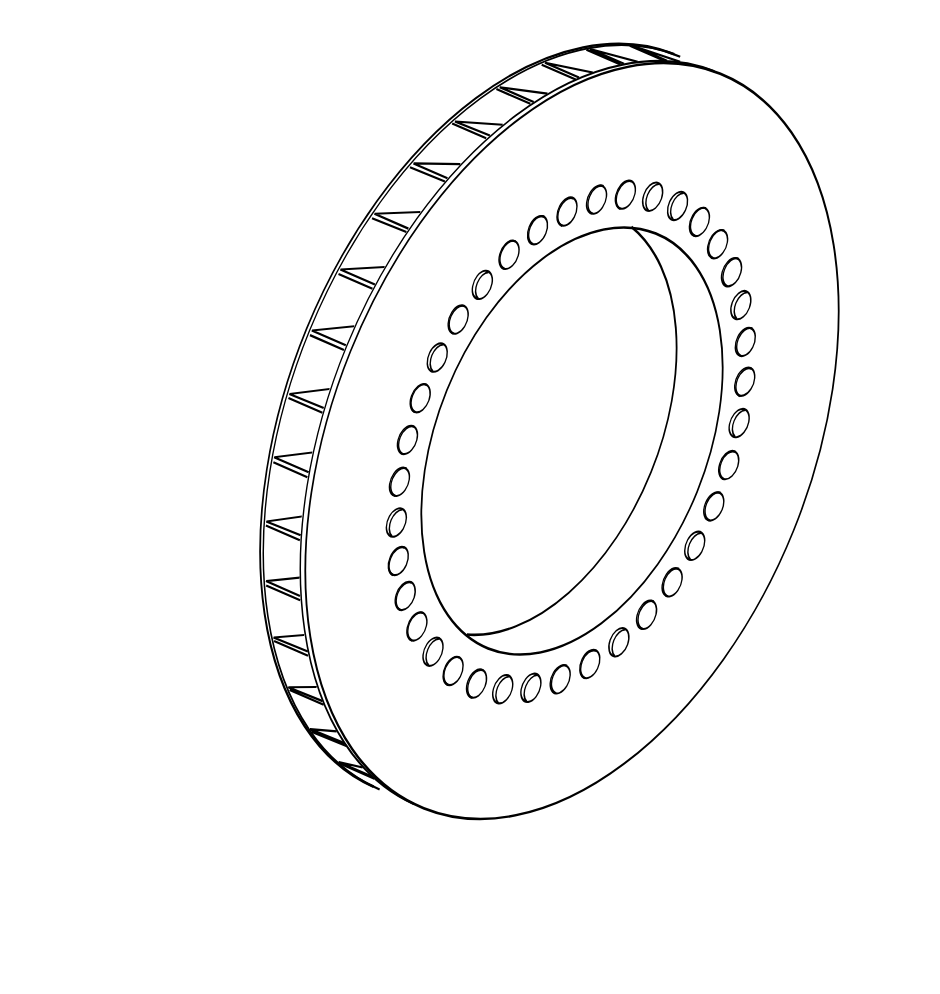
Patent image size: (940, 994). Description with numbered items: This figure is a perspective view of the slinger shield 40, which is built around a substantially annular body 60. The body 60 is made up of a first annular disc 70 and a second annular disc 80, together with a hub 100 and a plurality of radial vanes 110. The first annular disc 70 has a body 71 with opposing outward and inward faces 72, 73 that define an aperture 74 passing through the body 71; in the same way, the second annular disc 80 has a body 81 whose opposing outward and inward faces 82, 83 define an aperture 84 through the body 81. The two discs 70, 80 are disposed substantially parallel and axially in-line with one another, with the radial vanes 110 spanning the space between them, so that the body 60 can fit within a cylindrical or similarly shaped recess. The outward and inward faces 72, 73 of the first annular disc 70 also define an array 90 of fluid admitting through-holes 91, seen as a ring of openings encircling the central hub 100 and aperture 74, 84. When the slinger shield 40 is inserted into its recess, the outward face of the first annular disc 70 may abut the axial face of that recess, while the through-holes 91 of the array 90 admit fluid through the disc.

The slinger shield 40 is at (766, 100).
The annular body 60 is at (792, 167).
The first annular disc 70 is at (334, 719).
The body of the first annular disc 71 is at (338, 562).
The outward face of the first annular disc 72 is at (397, 265).
The inward face of the first annular disc 73 is at (382, 262).
The aperture of the first annular disc 74 is at (499, 442).
The second annular disc 80 is at (278, 667).
The body of the second annular disc 81 is at (271, 501).
The outward face of the second annular disc 82 is at (258, 607).
The inward face of the second annular disc 83 is at (272, 616).
The aperture of the second annular disc 84 is at (600, 451).
The array of fluid admitting through-holes 90 is at (615, 178).
The fluid admitting through-hole 91 is at (655, 188).
The hub 100 is at (577, 610).
The radial vanes 110 is at (430, 167).